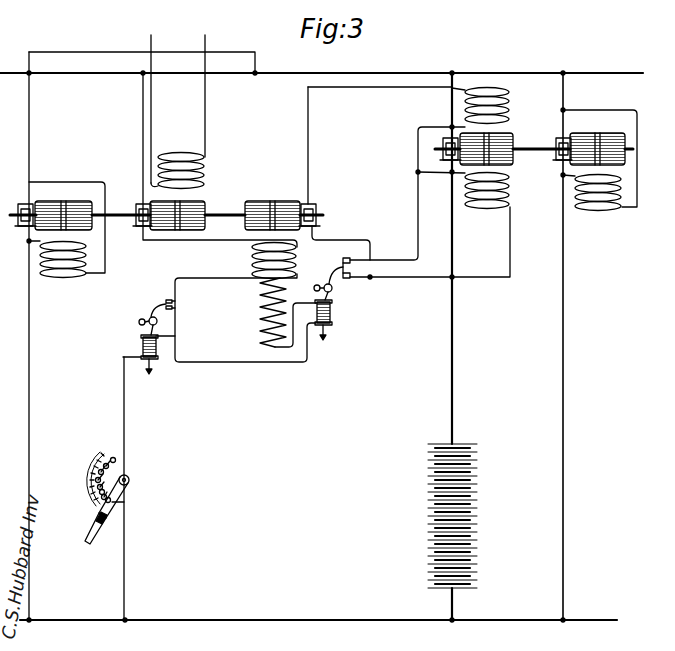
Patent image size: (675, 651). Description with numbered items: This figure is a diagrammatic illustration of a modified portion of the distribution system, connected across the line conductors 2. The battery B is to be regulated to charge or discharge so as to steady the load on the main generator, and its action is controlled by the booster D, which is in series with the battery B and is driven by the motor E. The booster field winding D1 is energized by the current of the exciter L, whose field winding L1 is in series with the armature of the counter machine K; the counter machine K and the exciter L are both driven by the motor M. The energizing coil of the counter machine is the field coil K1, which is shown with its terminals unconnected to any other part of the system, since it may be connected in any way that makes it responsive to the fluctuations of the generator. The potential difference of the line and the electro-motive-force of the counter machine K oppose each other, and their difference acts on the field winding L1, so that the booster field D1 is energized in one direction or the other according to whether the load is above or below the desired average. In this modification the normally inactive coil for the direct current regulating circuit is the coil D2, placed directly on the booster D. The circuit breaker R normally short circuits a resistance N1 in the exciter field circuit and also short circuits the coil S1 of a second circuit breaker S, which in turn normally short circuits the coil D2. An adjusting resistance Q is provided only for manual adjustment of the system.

The line conductors 2 is at (592, 70).
The motor M is at (45, 192).
The counter machine K is at (199, 203).
The field coil K1 is at (178, 112).
The exciter L is at (264, 203).
The field winding L1 is at (250, 258).
The resistance N1 is at (261, 312).
The circuit breaker R is at (162, 303).
The circuit breaker S is at (332, 268).
The coil S1 is at (332, 314).
The booster D is at (504, 141).
The booster field winding D1 is at (510, 110).
The normally inactive coil D2 is at (504, 189).
The motor E is at (620, 134).
The battery B is at (460, 516).
The adjusting resistance Q is at (95, 498).